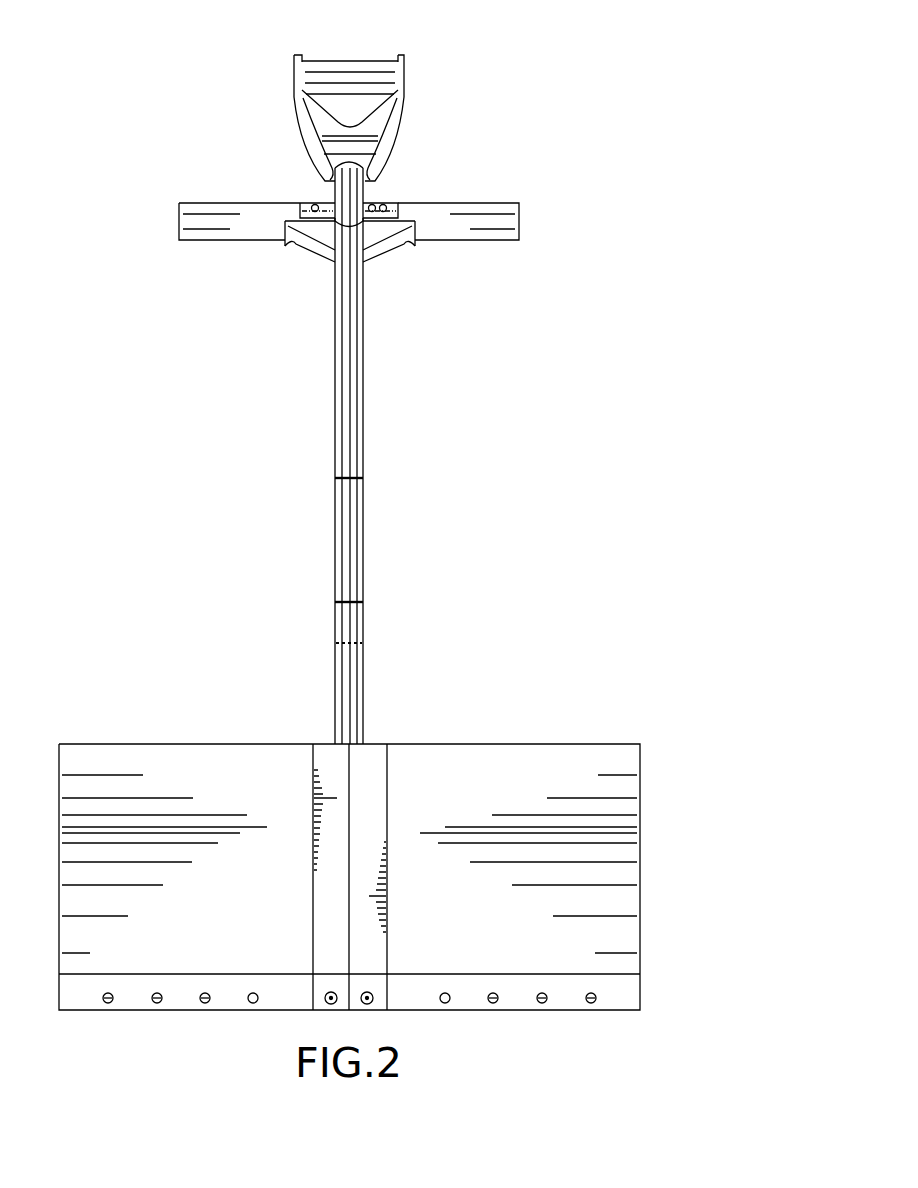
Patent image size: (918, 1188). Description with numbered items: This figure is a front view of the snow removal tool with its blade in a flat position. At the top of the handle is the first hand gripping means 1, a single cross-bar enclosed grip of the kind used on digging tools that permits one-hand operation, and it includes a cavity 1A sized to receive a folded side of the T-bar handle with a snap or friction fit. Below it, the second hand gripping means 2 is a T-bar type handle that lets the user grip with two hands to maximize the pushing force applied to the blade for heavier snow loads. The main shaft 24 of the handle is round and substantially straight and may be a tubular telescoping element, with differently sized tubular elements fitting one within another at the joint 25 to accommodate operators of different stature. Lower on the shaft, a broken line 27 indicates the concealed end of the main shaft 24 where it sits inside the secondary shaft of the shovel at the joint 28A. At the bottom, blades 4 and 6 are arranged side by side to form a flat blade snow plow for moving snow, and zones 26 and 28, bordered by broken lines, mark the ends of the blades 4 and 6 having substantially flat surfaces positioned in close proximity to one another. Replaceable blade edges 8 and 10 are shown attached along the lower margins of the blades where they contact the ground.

The first hand gripping means 1 is at (412, 68).
The cavity 1A is at (403, 128).
The second hand gripping means 2 is at (486, 200).
The blade 4 is at (148, 744).
The blade 6 is at (535, 744).
The replaceable blade edge 8 is at (518, 1004).
The replaceable blade edge 10 is at (190, 1004).
The main shaft 24 is at (365, 446).
The joint 25 is at (368, 478).
The zone 26 is at (326, 767).
The broken line 27 is at (366, 643).
The zone 28 is at (369, 760).
The joint 28A is at (366, 603).